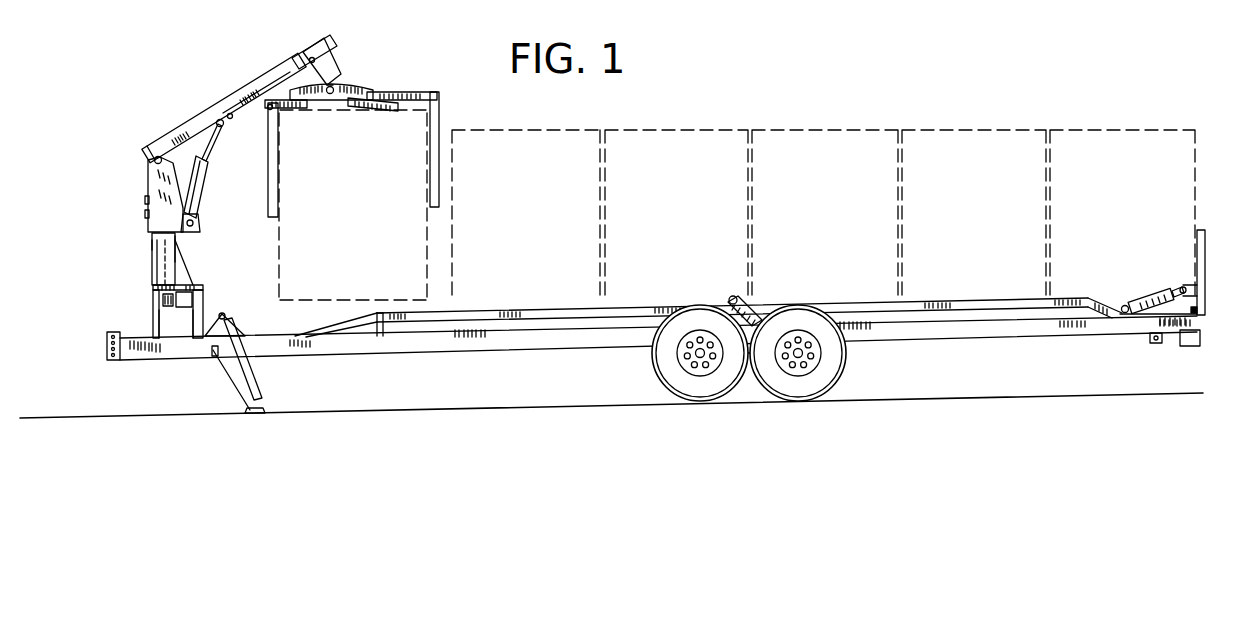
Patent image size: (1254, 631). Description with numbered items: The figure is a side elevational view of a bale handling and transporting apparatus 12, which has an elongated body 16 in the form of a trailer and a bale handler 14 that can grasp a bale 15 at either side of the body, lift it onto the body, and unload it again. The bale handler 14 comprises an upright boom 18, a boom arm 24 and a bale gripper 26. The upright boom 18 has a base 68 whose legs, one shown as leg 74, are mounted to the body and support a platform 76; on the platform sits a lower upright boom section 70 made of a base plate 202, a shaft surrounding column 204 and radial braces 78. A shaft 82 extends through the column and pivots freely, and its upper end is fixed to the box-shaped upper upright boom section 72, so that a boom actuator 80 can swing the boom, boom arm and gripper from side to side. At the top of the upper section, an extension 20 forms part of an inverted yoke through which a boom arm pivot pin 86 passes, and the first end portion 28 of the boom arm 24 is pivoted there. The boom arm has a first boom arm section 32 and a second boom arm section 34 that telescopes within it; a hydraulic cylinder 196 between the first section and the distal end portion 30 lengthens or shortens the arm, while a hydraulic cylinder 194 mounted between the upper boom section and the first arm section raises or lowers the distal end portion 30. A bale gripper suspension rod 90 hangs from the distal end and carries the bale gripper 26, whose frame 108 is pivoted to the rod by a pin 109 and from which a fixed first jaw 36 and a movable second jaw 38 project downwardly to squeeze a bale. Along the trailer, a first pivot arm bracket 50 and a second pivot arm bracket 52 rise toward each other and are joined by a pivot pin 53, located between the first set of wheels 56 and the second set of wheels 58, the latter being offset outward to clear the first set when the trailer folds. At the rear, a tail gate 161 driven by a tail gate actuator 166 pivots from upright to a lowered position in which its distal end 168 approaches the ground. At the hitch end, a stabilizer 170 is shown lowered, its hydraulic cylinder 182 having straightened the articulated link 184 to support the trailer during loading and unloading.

The bale handling and transporting apparatus 12 is at (503, 366).
The bale handler 14 is at (345, 46).
The bale 15 is at (1140, 222).
The elongated body 16 is at (1013, 346).
The upright boom 18 is at (146, 257).
The extension 20 is at (180, 170).
The boom arm 24 is at (168, 120).
The bale gripper 26 is at (392, 80).
The first end portion 28 is at (153, 138).
The distal end portion 30 is at (316, 36).
The first boom arm section 32 is at (233, 90).
The second boom arm section 34 is at (291, 55).
The first bale gripping jaw 36 is at (268, 197).
The second bale gripping jaw 38 is at (441, 122).
The first pivot arm bracket 50 is at (718, 301).
The second pivot arm bracket 52 is at (758, 305).
The pivot pin 53 is at (731, 297).
The first set of wheels 56 is at (664, 384).
The second set of wheels 58 is at (835, 384).
The base 68 is at (143, 302).
The lower upright boom section 70 is at (154, 270).
The upper upright boom section 72 is at (147, 200).
The leg 74 is at (192, 323).
The platform 76 is at (204, 298).
The brace 78 is at (186, 270).
The boom actuator 80 is at (170, 320).
The shaft 82 is at (150, 240).
The boom arm pivot pin 86 is at (152, 160).
The bale gripper suspension rod 90 is at (333, 72).
The frame 108 is at (354, 110).
The pin 109 is at (330, 95).
The tail gate 161 is at (1207, 288).
The tail gate actuator 166 is at (1143, 318).
The distal end 168 is at (1199, 230).
The stabilizer 170 is at (218, 387).
The hydraulic cylinder 182 is at (246, 320).
The articulated link 184 is at (262, 384).
The hydraulic cylinder 194 is at (212, 184).
The hydraulic cylinder 196 is at (241, 118).
The base plate 202 is at (202, 288).
The shaft surrounding column 204 is at (177, 258).